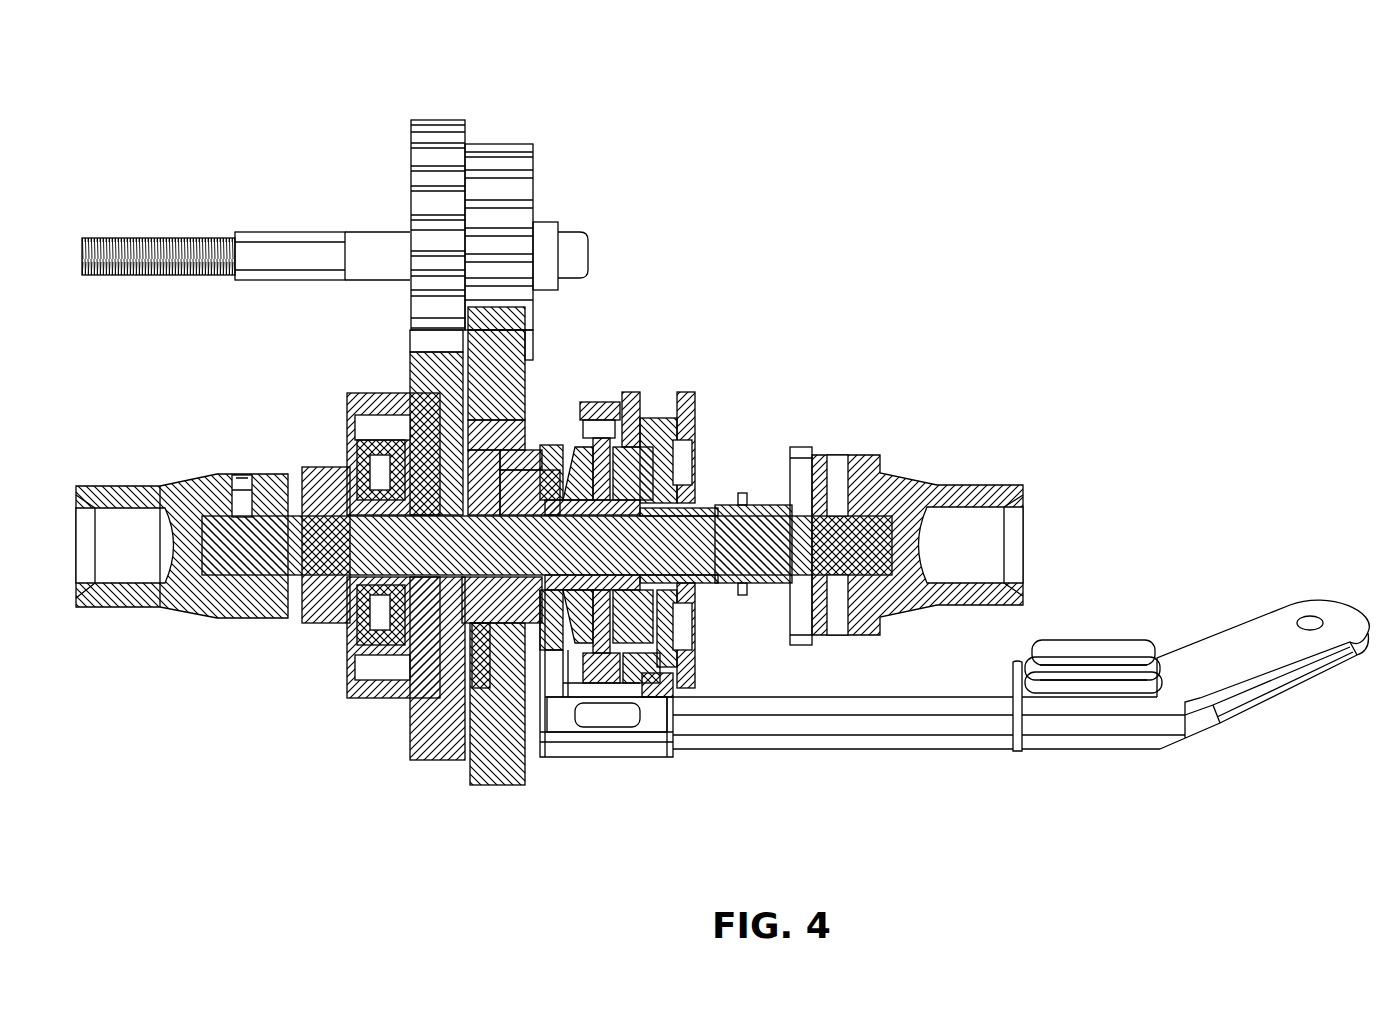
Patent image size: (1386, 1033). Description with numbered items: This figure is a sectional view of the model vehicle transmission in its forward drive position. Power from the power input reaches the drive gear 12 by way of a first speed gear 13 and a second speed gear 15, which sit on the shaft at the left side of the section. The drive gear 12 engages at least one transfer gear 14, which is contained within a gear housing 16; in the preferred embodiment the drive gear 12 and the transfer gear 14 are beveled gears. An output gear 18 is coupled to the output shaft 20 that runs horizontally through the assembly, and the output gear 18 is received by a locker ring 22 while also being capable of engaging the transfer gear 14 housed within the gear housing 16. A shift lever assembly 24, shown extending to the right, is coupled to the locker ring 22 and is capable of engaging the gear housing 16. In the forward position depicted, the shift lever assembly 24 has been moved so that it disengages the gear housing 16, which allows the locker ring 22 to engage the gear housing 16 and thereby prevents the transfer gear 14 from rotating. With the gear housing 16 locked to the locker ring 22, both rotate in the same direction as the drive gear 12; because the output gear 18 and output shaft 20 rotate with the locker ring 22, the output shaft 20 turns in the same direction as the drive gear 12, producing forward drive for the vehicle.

The drive gear 12 is at (550, 623).
The first speed gear 13 is at (410, 92).
The transfer gear 14 is at (626, 440).
The second speed gear 15 is at (410, 798).
The gear housing 16 is at (604, 392).
The output gear 18 is at (697, 688).
The output shaft 20 is at (712, 528).
The locker ring 22 is at (700, 397).
The shift lever assembly 24 is at (858, 764).